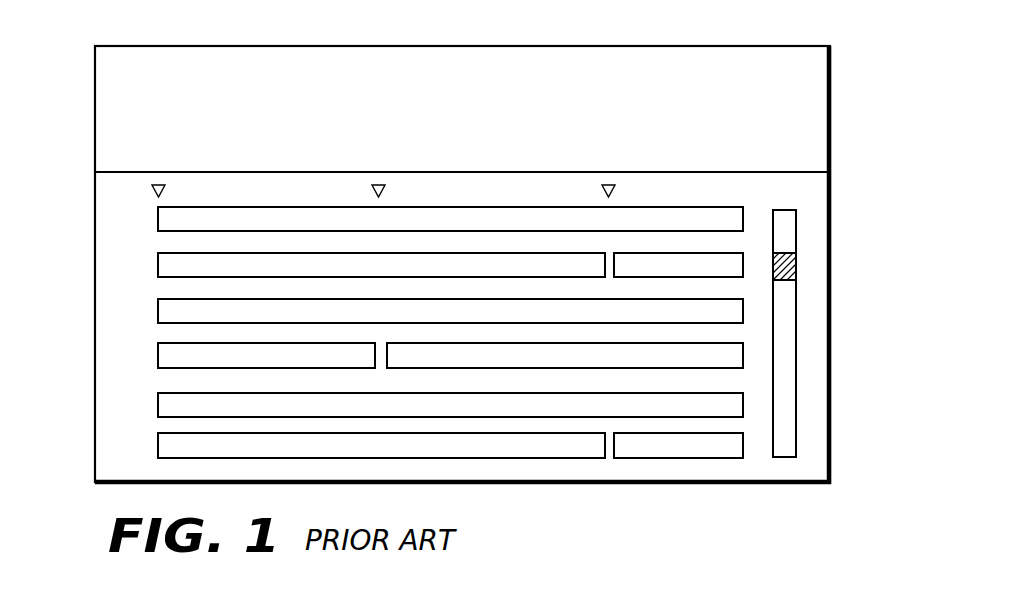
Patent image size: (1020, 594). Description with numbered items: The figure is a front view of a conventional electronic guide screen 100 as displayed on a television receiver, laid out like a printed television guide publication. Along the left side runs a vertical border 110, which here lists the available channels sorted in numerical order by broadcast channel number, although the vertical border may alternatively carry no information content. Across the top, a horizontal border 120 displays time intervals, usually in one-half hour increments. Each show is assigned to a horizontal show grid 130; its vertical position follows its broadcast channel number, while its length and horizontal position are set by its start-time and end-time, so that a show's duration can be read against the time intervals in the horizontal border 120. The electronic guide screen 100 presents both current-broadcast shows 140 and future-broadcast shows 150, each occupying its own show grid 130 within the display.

The electronic guide screen 100 is at (846, 397).
The vertical border 110 is at (101, 339).
The horizontal border 120 is at (527, 204).
The horizontal show grid 130 is at (748, 206).
The current-broadcast shows 140 is at (300, 233).
The future-broadcast shows 150 is at (634, 257).